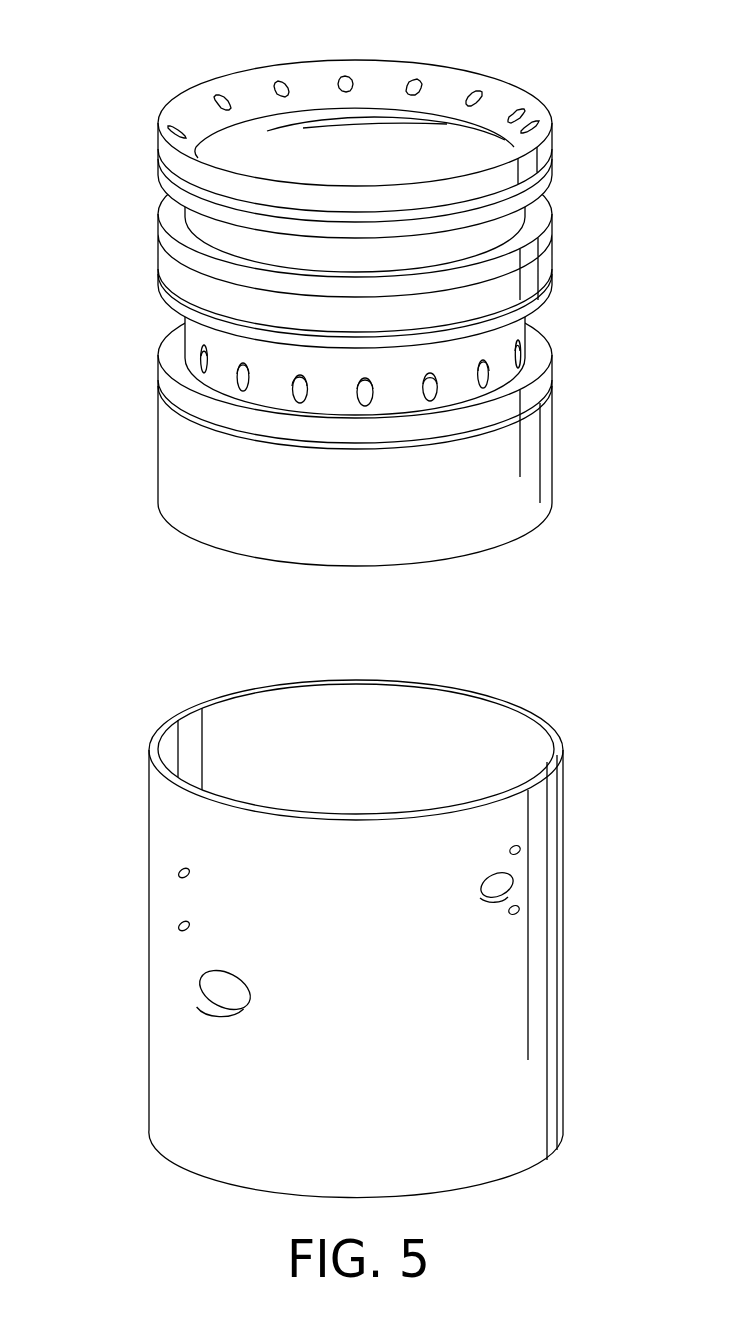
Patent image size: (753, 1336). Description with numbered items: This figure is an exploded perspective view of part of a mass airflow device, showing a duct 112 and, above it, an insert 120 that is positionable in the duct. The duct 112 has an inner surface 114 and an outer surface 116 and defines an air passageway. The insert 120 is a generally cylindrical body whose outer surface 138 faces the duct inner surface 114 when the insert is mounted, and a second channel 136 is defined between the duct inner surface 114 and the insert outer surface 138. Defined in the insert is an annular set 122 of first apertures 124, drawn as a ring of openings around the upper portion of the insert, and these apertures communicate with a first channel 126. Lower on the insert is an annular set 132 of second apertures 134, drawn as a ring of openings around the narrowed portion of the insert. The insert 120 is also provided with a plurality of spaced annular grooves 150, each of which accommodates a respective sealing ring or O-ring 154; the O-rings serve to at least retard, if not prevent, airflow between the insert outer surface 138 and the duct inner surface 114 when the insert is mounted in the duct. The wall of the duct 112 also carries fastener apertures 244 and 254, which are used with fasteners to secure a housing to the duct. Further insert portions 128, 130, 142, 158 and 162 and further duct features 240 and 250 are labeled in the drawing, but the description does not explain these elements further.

The duct 112 is at (565, 970).
The inner surface 114 is at (482, 727).
The outer surface 116 is at (517, 1156).
The insert 120 is at (555, 428).
The annular set 122 is at (378, 80).
The first apertures 124 is at (477, 88).
The first channel 126 is at (162, 152).
The middle ring upper portion 128 is at (557, 226).
The middle ring flange 130 is at (555, 268).
The annular set 132 is at (200, 383).
The second apertures 134 is at (203, 357).
The second channel 136 is at (552, 345).
The outer surface 138 is at (168, 272).
The lower ring outer surface 142 is at (514, 520).
The annular grooves 150 is at (556, 148).
The O-ring 154 is at (292, 442).
The inner surface 158 is at (332, 142).
The inner edge 162 is at (240, 153).
The side opening 240 is at (508, 895).
The fastener aperture 244 is at (520, 852).
The side opening 250 is at (212, 1004).
The fastener aperture 254 is at (177, 874).